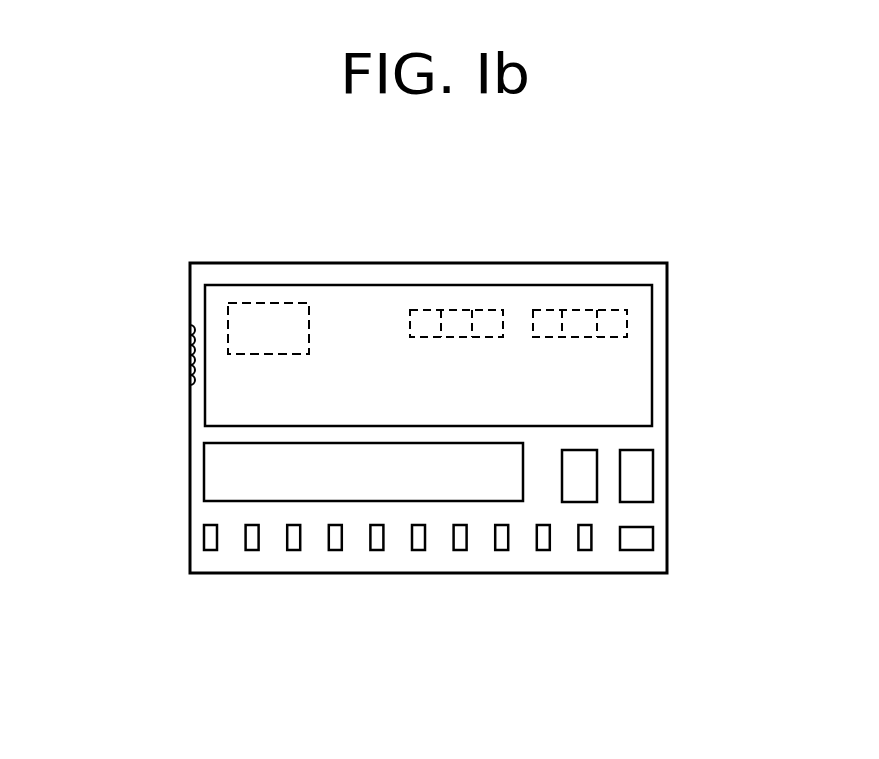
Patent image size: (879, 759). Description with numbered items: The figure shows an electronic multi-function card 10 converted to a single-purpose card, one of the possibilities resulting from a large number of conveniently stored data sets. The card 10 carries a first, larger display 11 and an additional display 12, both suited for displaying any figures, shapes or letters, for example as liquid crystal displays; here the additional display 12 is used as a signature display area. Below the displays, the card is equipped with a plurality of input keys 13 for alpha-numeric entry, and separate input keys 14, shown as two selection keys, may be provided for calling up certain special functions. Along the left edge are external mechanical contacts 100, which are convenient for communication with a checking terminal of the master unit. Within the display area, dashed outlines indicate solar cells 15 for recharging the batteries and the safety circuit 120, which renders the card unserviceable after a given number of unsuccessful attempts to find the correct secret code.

The electronic multi-function card 10 is at (658, 363).
The display 11 is at (565, 292).
The additional display 12 is at (220, 472).
The input keys 13 is at (543, 545).
The separate input keys 14 is at (587, 458).
The solar cells 15 is at (617, 325).
The external mechanical contacts 100 is at (190, 355).
The safety circuit 120 is at (266, 318).